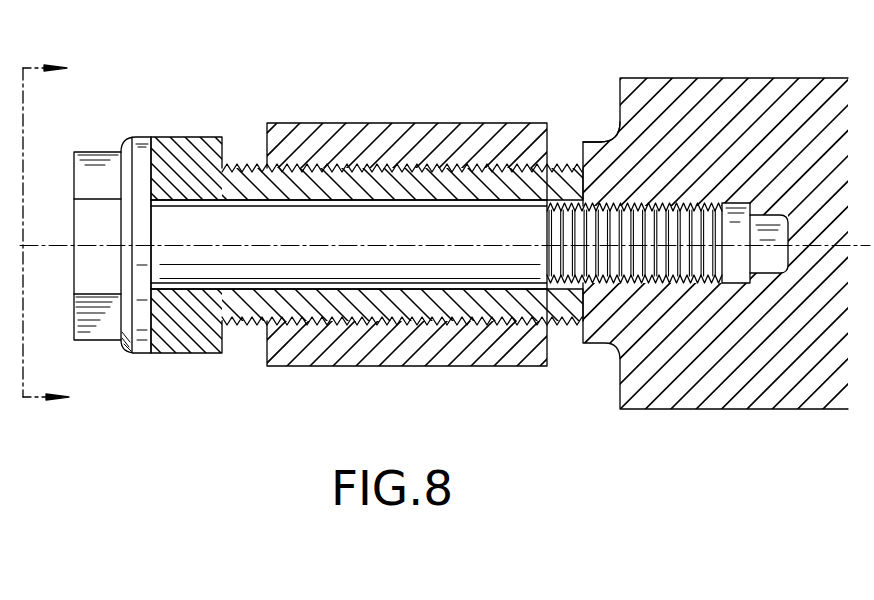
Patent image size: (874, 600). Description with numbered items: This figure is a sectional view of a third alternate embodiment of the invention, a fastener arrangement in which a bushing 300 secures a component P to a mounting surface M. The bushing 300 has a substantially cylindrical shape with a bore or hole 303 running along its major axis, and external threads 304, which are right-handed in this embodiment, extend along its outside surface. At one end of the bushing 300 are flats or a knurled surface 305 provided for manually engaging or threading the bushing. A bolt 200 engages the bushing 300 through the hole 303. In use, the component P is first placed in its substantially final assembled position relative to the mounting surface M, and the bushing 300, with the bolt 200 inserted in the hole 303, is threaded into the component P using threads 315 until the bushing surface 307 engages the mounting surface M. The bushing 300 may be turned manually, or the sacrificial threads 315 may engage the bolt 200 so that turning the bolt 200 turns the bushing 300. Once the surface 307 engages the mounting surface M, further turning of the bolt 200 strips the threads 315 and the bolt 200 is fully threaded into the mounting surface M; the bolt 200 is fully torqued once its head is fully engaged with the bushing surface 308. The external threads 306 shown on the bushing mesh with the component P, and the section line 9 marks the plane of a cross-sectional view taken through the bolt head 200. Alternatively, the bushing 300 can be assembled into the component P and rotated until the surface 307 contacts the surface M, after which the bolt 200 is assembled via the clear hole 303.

The section line 9- 9 is at (57, 235).
The bolt 200 is at (97, 152).
The bushing 300 is at (214, 111).
The bore or hole 303 is at (343, 267).
The external threads 304 is at (229, 328).
The flats or knurled surface 305 is at (172, 353).
The external threads of sleeve 306 is at (228, 152).
The surface 307 is at (588, 176).
The bushing surface 308 is at (150, 168).
The threads 315 is at (383, 283).
The mounting surface M is at (583, 190).
The component P is at (333, 137).